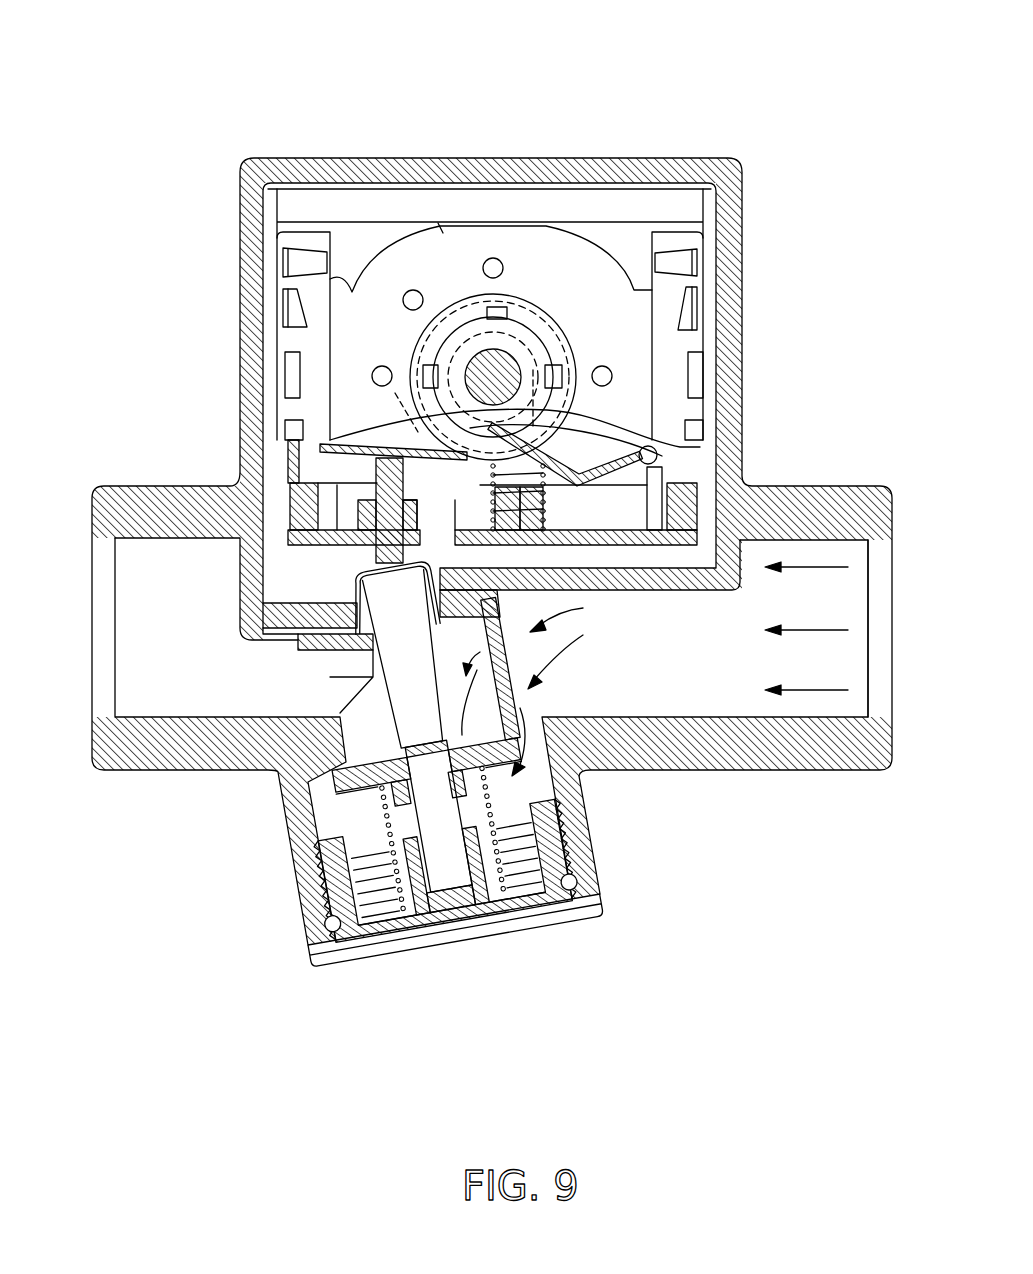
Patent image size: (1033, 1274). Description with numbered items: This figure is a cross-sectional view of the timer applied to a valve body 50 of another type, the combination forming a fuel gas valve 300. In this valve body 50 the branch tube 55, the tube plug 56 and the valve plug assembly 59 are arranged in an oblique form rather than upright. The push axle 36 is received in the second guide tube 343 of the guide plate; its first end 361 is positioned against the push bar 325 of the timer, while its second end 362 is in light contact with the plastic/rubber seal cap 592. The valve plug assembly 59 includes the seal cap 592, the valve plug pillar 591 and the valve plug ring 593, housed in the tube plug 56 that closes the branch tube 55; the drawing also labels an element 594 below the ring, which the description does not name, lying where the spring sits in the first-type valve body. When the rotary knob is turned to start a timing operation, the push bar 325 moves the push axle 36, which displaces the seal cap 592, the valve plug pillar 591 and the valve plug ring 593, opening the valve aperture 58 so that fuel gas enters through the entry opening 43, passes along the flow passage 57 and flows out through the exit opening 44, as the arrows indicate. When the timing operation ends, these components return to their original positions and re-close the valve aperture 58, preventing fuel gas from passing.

The fuel gas valve 300 is at (162, 99).
The valve body 50 is at (742, 352).
The first end 361 is at (332, 479).
The push bar 325 is at (655, 465).
The second guide tube 343 is at (373, 452).
The push axle 36 is at (390, 510).
The second end 362 is at (380, 549).
The exit opening 44 is at (107, 644).
The plastic/rubber seal cap 592 is at (362, 584).
The flow passage 57 is at (325, 697).
The valve plug pillar 591 is at (372, 727).
The valve plug ring 593 is at (340, 770).
The entry opening 43 is at (880, 655).
The valve plug assembly 59 is at (478, 658).
The valve aperture 58 is at (560, 664).
The branch tube 55 is at (596, 843).
The tube plug 56 is at (602, 878).
The valve stem 594 is at (490, 813).